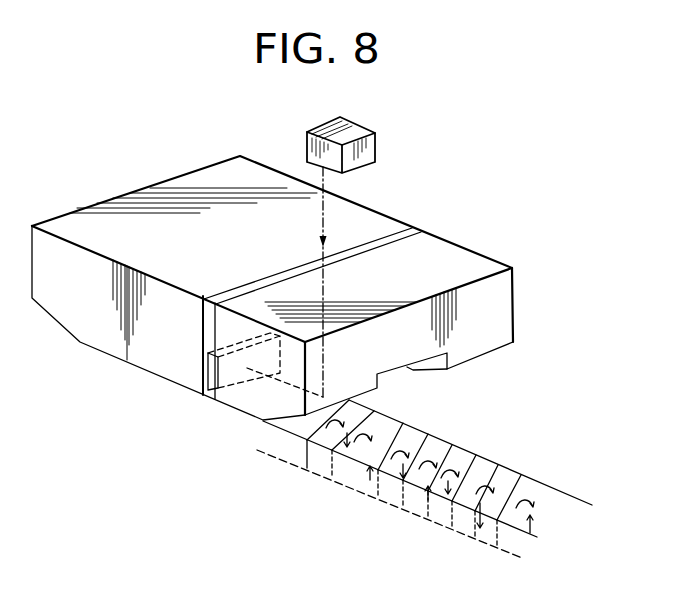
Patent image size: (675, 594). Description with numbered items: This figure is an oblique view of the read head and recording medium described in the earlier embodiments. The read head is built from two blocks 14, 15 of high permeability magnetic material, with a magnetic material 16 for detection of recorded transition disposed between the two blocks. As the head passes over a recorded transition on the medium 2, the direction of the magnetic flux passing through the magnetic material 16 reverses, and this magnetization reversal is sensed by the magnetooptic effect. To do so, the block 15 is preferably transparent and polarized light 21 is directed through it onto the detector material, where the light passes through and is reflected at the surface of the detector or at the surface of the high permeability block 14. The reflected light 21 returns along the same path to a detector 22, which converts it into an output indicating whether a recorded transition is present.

The medium 2 is at (420, 438).
The high permeability magnetic material block 14 is at (116, 210).
The high permeability magnetic material block 15 is at (478, 267).
The magnetic material for detection of recorded transition 16 is at (230, 383).
The polarized light 21 is at (325, 214).
The detector 22 is at (377, 148).